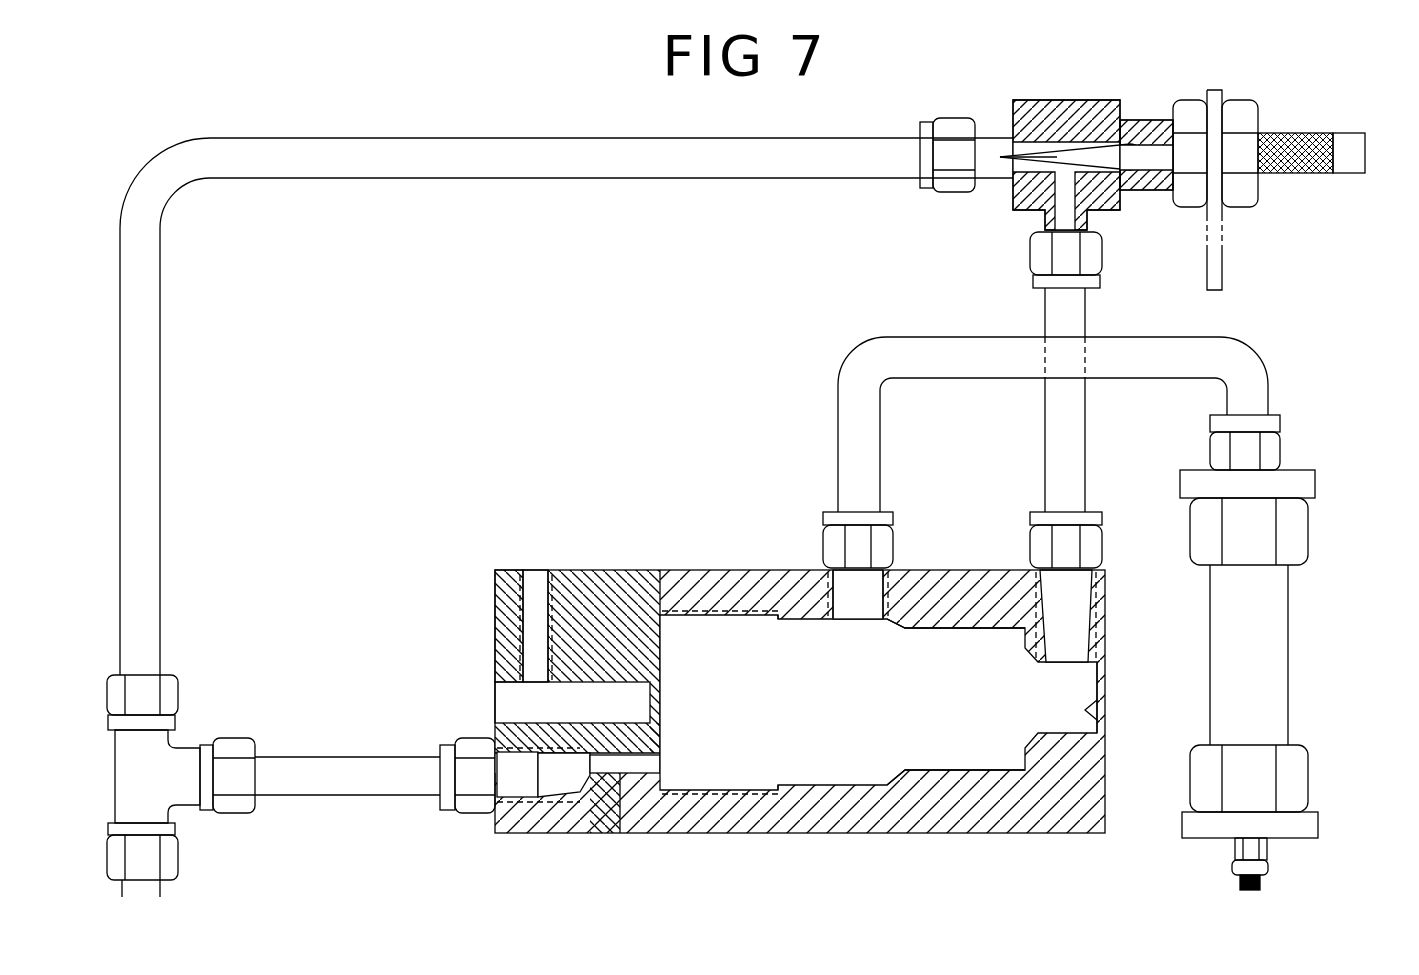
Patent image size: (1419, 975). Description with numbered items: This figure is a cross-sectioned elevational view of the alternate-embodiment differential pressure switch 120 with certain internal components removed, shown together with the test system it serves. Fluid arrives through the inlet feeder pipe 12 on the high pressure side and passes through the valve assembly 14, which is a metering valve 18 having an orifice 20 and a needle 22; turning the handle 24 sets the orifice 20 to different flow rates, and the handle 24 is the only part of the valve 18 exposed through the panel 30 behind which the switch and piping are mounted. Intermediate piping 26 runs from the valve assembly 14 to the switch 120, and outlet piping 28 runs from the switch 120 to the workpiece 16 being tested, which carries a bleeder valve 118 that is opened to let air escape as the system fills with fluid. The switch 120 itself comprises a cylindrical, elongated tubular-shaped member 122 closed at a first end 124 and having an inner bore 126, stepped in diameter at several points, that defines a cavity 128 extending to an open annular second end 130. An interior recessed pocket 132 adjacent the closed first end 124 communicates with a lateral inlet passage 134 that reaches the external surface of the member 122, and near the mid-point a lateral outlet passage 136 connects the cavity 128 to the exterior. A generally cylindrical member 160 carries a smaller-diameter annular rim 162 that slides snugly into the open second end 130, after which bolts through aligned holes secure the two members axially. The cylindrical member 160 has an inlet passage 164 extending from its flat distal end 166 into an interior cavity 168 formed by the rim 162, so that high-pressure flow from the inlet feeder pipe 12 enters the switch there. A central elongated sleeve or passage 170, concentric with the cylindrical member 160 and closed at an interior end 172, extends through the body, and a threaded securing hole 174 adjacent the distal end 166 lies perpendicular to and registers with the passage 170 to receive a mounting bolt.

The inlet feeder pipe 12 is at (165, 585).
The valve assembly 14 is at (1273, 198).
The workpiece 16 is at (1290, 675).
The metering valve 18 is at (1137, 118).
The orifice 20 is at (1002, 153).
The needle 22 is at (1080, 118).
The handle 24 is at (1258, 108).
The intermediate piping 26 is at (1045, 310).
The outlet piping 28 is at (1272, 378).
The panel 30 is at (1222, 263).
The bleeder valve 118 is at (1268, 870).
The differential pressure switch 120 is at (522, 428).
The tubular-shaped member 122 is at (653, 573).
The first end 124 is at (1113, 635).
The inner bore 126 is at (968, 640).
The cavity 128 is at (892, 727).
The open annular second end 130 is at (613, 622).
The interior recessed pocket 132 is at (1102, 727).
The lateral inlet passage 134 is at (1068, 612).
The lateral outlet passage 136 is at (885, 590).
The cylindrical member 160 is at (575, 595).
The annular rim 162 is at (725, 623).
The inlet passage 164 is at (552, 780).
The distal end 166 is at (492, 657).
The interior cavity 168 is at (756, 724).
The elongated sleeve or passage 170 is at (510, 727).
The interior end 172 is at (650, 700).
The threaded securing hole 174 is at (537, 592).